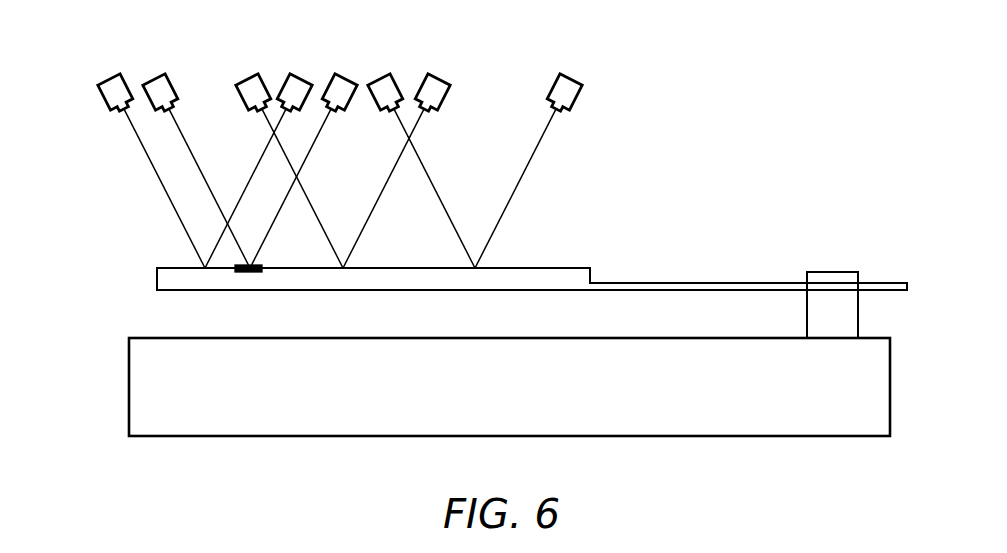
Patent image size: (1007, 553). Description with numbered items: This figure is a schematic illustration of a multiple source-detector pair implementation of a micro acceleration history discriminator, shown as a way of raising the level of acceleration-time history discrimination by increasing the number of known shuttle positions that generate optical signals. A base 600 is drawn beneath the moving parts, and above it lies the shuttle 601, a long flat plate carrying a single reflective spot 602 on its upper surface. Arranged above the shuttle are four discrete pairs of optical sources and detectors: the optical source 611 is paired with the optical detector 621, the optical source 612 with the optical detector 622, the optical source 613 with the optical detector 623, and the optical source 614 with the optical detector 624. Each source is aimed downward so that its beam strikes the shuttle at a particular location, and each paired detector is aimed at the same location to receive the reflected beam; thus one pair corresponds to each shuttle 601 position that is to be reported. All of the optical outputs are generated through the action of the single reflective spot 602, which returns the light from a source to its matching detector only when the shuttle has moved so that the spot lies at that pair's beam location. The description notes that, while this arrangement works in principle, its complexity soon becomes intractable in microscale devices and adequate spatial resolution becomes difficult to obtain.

The stage 600 is at (513, 398).
The shuttle 601 is at (593, 272).
The reflective spot 602 is at (248, 272).
The optical source 611 is at (107, 77).
The optical source 612 is at (140, 79).
The optical source 613 is at (237, 82).
The optical source 614 is at (382, 75).
The optical detector 621 is at (293, 72).
The optical detector 622 is at (343, 70).
The optical detector 623 is at (433, 72).
The optical detector 624 is at (570, 73).